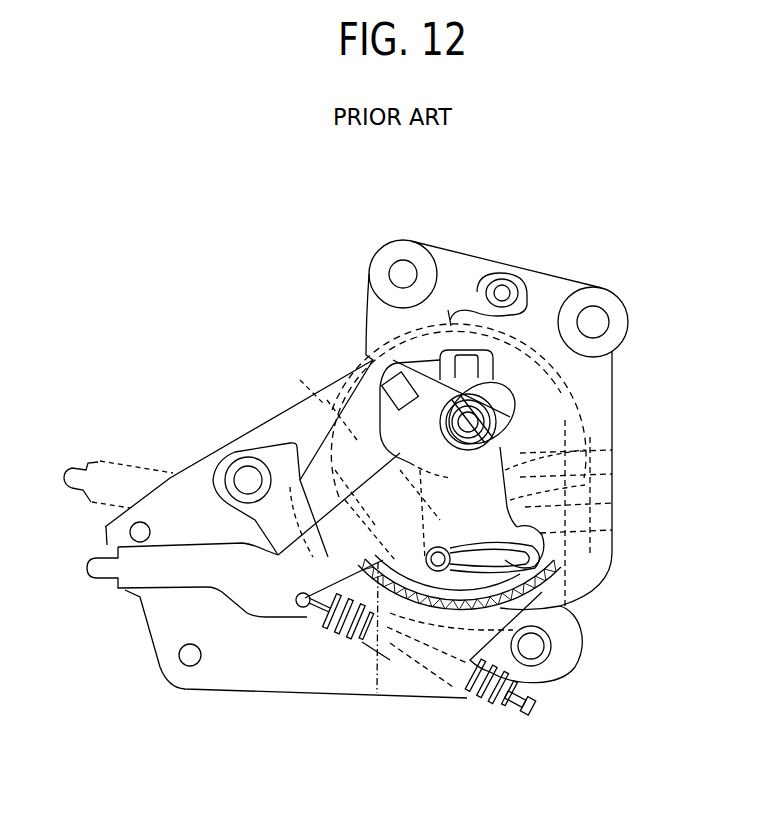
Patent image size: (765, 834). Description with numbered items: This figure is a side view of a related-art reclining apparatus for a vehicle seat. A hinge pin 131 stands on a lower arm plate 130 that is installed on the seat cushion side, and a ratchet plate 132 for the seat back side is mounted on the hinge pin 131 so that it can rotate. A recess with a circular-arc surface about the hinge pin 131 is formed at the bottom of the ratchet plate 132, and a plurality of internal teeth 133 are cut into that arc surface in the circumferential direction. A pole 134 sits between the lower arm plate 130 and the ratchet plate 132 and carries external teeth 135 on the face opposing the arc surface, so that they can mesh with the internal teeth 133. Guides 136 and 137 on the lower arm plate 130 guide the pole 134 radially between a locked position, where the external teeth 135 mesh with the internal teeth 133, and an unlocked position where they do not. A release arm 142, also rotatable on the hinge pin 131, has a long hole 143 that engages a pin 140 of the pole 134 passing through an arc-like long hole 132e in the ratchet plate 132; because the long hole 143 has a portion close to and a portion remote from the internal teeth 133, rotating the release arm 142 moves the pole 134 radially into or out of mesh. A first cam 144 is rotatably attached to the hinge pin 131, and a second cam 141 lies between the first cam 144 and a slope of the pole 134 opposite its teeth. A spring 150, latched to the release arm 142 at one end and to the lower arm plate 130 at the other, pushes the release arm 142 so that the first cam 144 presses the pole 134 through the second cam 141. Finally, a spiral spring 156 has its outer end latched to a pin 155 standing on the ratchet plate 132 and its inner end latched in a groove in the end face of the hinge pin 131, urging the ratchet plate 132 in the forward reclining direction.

The lower arm plate 130 is at (245, 673).
The hinge pin 131 is at (512, 420).
The ratchet plate 132 is at (596, 385).
The arc-like long hole 132e is at (542, 528).
The internal teeth 133 is at (603, 590).
The pole 134 is at (313, 392).
The external teeth 135 is at (578, 611).
The guide 136 is at (378, 694).
The guide 137 is at (606, 495).
The pin 140 is at (608, 567).
The second cam 141 is at (606, 472).
The release arm 142 is at (148, 577).
The long hole 143 is at (490, 560).
The first cam 144 is at (604, 445).
The spring 150 is at (468, 698).
The pin 155 is at (508, 285).
The spiral spring 156 is at (525, 287).